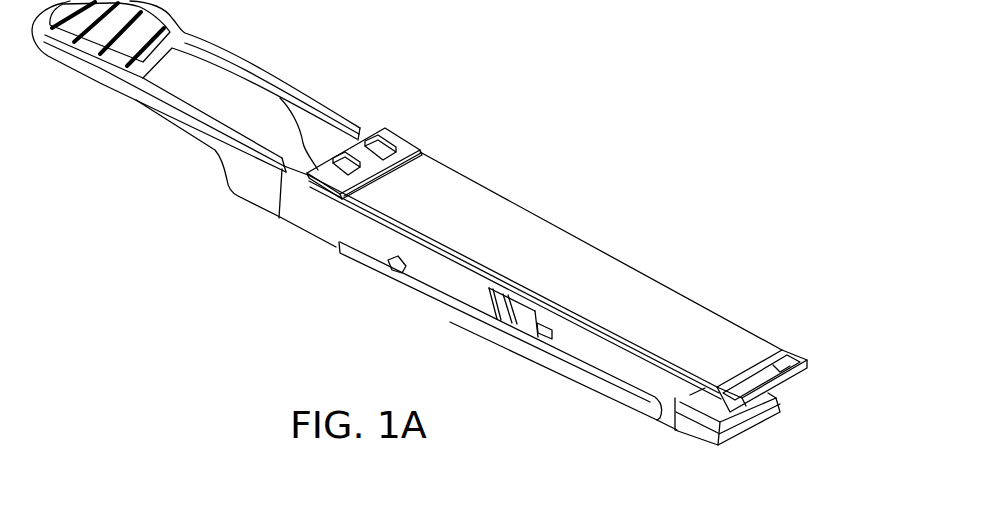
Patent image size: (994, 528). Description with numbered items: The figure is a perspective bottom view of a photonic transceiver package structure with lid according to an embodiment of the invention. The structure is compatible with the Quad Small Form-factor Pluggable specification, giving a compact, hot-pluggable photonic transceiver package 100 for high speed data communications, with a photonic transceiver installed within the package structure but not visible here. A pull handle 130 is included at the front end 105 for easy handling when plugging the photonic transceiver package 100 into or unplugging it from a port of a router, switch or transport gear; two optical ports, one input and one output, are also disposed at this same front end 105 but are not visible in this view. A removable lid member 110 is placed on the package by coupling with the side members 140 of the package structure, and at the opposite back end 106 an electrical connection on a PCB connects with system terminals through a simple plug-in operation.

The photonic transceiver package 100 is at (606, 127).
The front end 105 is at (302, 162).
The back end 106 is at (760, 410).
The lid member 110 is at (540, 250).
The pull handle 130 is at (137, 100).
The side members 140 is at (383, 241).